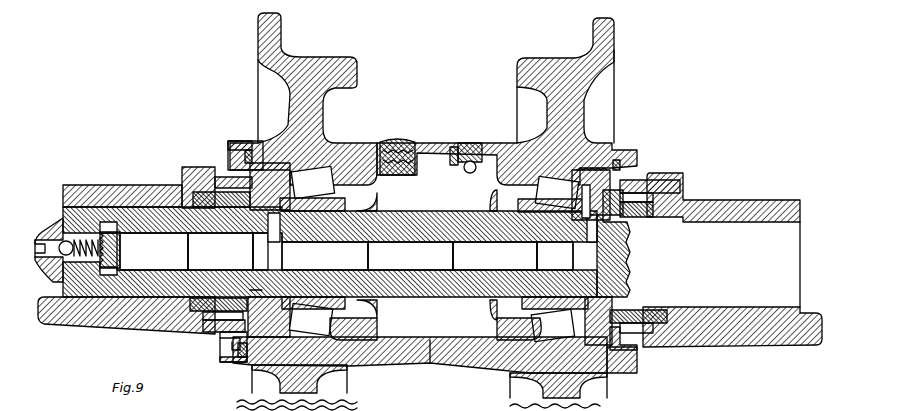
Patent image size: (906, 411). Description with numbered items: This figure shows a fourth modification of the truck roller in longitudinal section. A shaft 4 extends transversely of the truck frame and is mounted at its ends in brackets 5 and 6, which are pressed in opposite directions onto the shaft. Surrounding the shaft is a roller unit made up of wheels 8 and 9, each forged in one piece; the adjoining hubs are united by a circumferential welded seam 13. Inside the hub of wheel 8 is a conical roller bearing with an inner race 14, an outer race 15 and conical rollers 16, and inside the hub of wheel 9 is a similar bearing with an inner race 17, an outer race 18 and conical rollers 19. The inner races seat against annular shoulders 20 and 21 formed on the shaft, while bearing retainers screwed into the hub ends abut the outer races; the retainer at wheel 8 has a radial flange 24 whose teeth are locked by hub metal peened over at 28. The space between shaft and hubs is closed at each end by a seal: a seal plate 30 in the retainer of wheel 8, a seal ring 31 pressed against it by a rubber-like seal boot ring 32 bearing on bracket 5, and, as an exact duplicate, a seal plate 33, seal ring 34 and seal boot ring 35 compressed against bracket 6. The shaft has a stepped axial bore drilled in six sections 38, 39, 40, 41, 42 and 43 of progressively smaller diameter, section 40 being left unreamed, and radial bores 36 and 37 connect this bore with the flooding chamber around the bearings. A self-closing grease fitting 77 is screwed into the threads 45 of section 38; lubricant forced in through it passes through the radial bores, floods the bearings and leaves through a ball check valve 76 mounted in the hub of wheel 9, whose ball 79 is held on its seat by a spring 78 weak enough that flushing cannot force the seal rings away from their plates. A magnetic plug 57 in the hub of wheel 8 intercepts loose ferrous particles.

The shaft 4 is at (800, 272).
The bracket 5 is at (117, 330).
The bracket 6 is at (715, 345).
The wheel 8 is at (258, 97).
The wheel 9 is at (608, 103).
The welded seam 13 is at (430, 364).
The inner race 14 is at (333, 318).
The outer race 15 is at (329, 175).
The conical rollers 16 is at (310, 319).
The inner race 17 is at (528, 317).
The outer race 18 is at (538, 186).
The conical rollers 19 is at (552, 325).
The annular shoulder 20 is at (349, 204).
The annular shoulder 21 is at (520, 205).
The radial flange 24 is at (220, 344).
The peened-over metal 28 is at (234, 360).
The seal plate 30 is at (262, 236).
The seal ring 31 is at (261, 281).
The seal boot ring 32 is at (216, 170).
The seal plate 33 is at (610, 256).
The seal ring 34 is at (632, 305).
The seal boot ring 35 is at (653, 313).
The radial bore 36 is at (273, 243).
The radial bore 37 is at (591, 243).
The bore section 38 is at (154, 251).
The bore section 39 is at (220, 251).
The bore section 40 is at (325, 256).
The bore section 41 is at (410, 256).
The bore section 42 is at (495, 256).
The bore section 43 is at (555, 256).
The screw threads 45 is at (121, 250).
The magnetic plug 57 is at (399, 143).
The ball check valve 76 is at (476, 143).
The self-closing grease fitting 77 is at (52, 224).
The spring 78 is at (453, 147).
The ball 79 is at (470, 173).